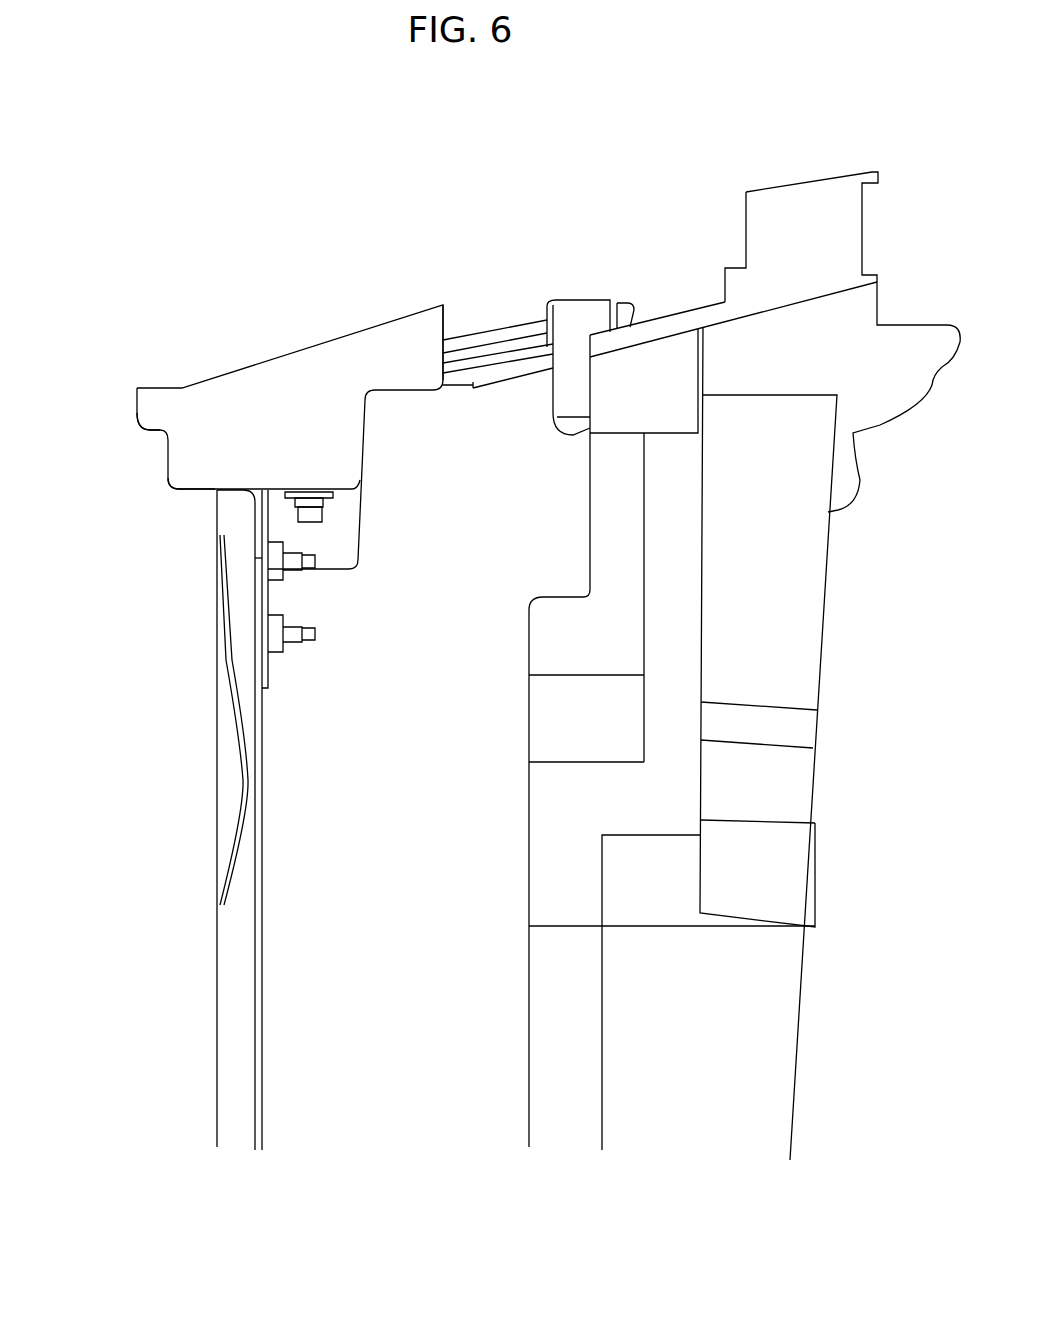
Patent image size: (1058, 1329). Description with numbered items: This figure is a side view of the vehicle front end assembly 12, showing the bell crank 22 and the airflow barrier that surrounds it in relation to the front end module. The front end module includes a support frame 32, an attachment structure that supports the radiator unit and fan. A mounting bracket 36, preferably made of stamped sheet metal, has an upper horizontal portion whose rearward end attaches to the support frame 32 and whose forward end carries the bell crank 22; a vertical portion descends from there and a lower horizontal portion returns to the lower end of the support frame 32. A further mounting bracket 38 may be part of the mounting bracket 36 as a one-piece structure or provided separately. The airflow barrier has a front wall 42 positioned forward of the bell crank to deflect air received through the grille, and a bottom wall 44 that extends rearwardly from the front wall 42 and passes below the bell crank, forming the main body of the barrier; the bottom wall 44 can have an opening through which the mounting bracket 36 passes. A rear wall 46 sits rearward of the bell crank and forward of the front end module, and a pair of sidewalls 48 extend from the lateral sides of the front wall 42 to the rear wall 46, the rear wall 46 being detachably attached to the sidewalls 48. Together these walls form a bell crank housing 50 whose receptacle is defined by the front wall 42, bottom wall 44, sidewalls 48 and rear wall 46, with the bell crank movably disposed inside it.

The vehicle front end assembly 12 is at (448, 258).
The bell crank 22 is at (458, 727).
The support frame 32 is at (721, 1085).
The mounting bracket 36 is at (270, 597).
The mounting bracket 38 is at (468, 370).
The front wall 42 is at (137, 400).
The bottom wall 44 is at (229, 477).
The rear wall 46 is at (443, 322).
The sidewalls 48 is at (197, 460).
The bell crank housing 50 is at (120, 455).